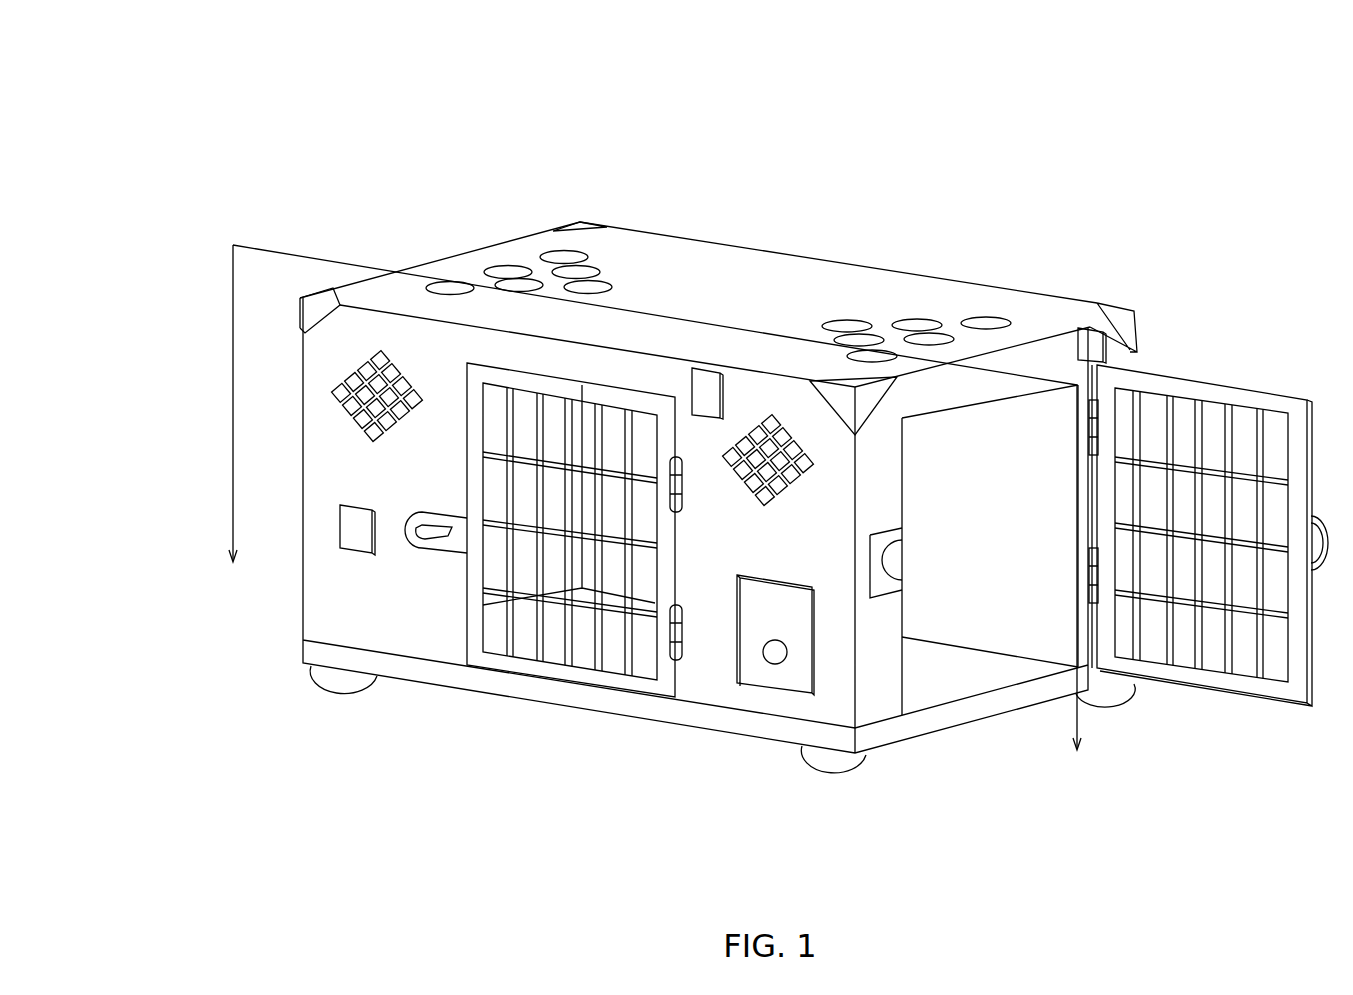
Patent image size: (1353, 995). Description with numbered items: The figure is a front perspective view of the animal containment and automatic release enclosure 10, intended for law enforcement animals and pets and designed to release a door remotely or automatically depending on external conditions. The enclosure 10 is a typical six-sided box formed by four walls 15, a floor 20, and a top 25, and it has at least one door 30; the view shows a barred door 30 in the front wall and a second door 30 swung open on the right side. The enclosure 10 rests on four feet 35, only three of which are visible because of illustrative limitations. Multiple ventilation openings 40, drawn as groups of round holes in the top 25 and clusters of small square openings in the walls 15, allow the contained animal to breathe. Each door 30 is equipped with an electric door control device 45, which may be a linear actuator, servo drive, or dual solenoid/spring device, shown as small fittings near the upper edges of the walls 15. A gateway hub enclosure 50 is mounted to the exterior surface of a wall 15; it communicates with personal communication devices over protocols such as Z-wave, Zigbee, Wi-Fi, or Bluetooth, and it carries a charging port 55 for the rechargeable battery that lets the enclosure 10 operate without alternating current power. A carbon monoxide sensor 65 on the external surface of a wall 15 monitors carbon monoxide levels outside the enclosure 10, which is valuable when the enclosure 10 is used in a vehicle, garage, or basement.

The animal containment and automatic release enclosure 10 is at (222, 210).
The wall 15 is at (388, 600).
The floor 20 is at (960, 675).
The top 25 is at (668, 262).
The door 30 is at (570, 672).
The foot 35 is at (333, 680).
The ventilation opening 40 is at (510, 265).
The door control device 45 is at (705, 385).
The gateway hub enclosure 50 is at (743, 648).
The charging port 55 is at (772, 660).
The carbon monoxide sensor 65 is at (350, 540).